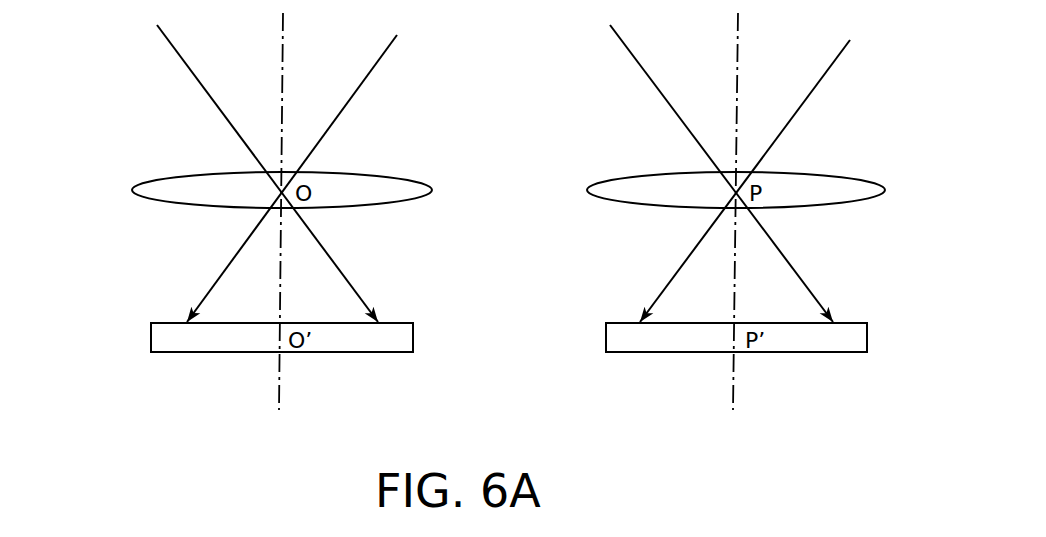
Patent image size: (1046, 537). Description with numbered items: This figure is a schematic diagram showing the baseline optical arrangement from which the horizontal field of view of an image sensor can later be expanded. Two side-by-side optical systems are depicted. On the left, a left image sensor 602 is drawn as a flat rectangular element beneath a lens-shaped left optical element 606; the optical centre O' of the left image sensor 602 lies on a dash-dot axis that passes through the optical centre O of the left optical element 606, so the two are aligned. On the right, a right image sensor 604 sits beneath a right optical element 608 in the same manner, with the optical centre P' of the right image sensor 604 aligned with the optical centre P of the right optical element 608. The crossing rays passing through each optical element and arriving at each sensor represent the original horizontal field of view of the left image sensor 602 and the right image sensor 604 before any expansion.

The left image sensor 602 is at (175, 339).
The right image sensor 604 is at (842, 343).
The left optical element 606 is at (155, 200).
The right optical element 608 is at (840, 200).